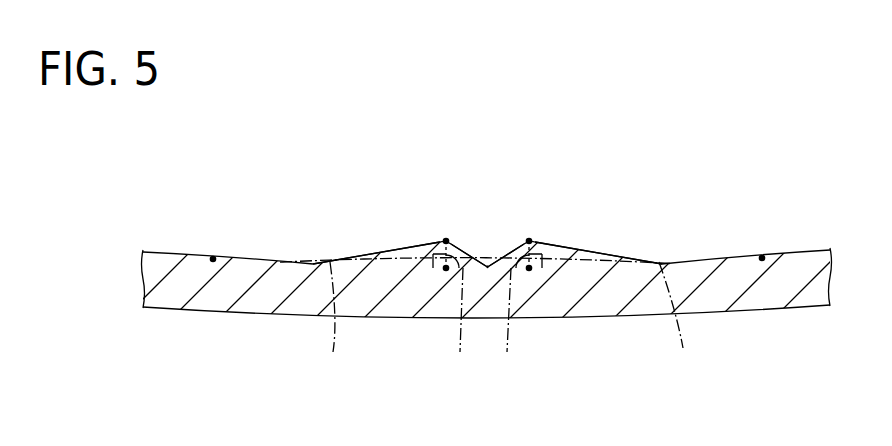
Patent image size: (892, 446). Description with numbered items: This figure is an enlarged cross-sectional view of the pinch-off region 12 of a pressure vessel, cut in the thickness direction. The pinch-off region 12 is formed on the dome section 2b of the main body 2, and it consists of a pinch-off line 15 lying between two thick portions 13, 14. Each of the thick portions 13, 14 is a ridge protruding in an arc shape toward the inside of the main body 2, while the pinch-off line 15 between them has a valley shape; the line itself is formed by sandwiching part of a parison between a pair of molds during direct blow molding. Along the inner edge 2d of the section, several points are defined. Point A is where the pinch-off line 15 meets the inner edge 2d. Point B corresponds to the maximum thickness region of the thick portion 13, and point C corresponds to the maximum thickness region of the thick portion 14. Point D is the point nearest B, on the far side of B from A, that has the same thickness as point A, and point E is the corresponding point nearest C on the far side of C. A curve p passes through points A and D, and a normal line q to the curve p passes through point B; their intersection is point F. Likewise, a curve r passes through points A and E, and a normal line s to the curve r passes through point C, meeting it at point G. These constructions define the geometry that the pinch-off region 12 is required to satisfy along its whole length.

The main body 2 is at (248, 315).
The dome section 2b is at (632, 318).
The inner edge 2d is at (605, 252).
The pinch-off region 12 is at (595, 150).
The thick portion 13 is at (434, 241).
The thick portion 14 is at (541, 242).
The pinch-off line 15 is at (486, 264).
The point A is at (487, 288).
The point B is at (446, 225).
The point C is at (529, 225).
The point D is at (215, 241).
The point E is at (761, 241).
The point F is at (445, 287).
The point G is at (529, 287).
The curve p is at (330, 320).
The normal line q is at (460, 323).
The curve r is at (675, 318).
The normal line s is at (505, 323).